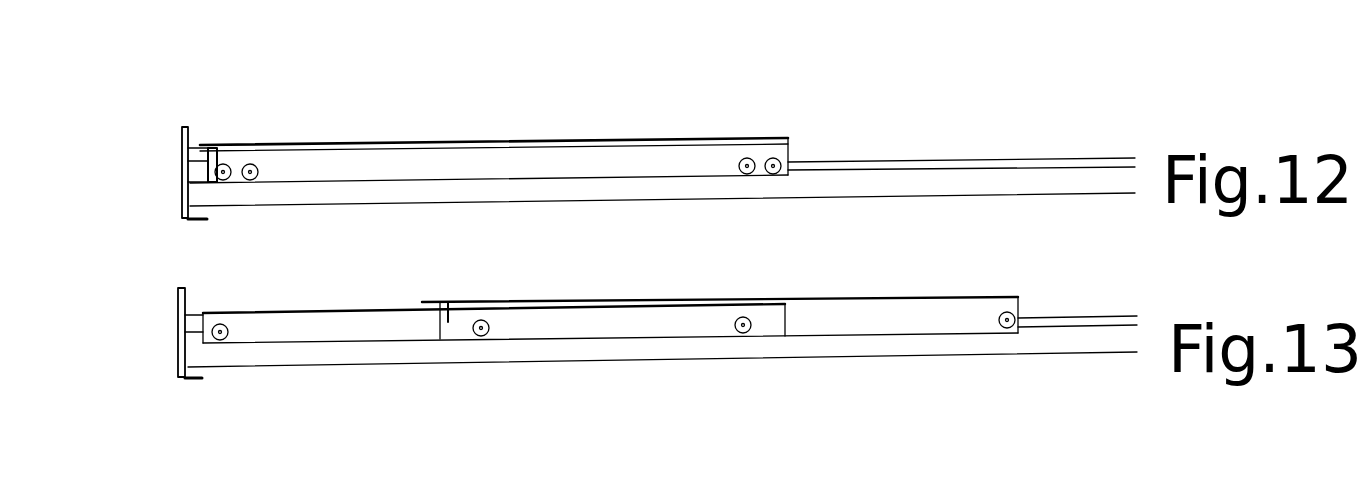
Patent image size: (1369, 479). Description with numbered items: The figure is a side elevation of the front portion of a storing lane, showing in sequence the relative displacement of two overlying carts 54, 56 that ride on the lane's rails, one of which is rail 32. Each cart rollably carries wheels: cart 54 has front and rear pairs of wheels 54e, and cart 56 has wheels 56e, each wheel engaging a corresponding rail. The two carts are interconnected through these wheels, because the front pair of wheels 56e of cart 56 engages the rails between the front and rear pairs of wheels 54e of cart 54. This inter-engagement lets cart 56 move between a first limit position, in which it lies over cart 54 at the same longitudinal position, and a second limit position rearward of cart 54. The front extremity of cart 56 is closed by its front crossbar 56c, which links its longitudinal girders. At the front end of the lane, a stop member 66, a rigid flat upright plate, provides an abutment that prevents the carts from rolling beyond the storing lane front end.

In FIG. 12, the rail 32 is at (978, 160).
In FIG. 12, the cart 54 is at (443, 143).
In FIG. 13, the cart 54 is at (372, 312).
In FIG. 12, the cart 56 is at (513, 140).
In FIG. 13, the cart 56 is at (940, 297).
In FIG. 12, the wheels 54e is at (223, 181).
In FIG. 13, the wheels 54e is at (218, 342).
In FIG. 12, the wheels 56e is at (250, 181).
In FIG. 13, the front crossbar 56c is at (478, 338).
In FIG. 12, the stop member 66 is at (182, 138).
In FIG. 13, the stop member 66 is at (178, 303).